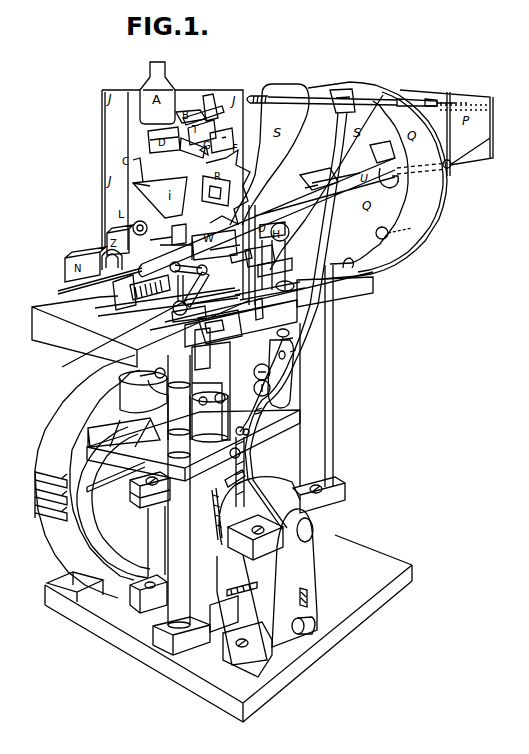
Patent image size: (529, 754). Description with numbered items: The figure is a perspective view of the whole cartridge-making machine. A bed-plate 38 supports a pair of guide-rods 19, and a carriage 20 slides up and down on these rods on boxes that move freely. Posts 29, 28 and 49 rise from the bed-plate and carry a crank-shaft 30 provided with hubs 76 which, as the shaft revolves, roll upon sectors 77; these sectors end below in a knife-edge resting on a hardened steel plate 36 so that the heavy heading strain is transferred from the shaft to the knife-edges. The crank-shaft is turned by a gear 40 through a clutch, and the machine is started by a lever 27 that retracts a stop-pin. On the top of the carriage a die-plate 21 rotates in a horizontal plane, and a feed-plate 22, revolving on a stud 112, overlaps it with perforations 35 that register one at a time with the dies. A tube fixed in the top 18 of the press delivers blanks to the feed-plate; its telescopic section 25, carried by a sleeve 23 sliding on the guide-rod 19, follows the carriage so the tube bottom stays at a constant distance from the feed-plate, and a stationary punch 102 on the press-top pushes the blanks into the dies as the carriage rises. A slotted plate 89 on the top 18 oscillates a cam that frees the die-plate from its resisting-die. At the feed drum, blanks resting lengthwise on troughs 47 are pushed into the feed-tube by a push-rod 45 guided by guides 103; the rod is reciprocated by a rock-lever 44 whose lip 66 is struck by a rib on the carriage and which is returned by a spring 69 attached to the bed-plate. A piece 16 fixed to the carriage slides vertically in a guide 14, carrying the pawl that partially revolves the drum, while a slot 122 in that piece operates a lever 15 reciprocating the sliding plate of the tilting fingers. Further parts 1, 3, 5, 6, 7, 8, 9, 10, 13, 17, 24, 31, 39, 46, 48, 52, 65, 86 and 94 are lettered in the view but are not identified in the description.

The bracket 1 is at (179, 234).
The disc 3 is at (144, 225).
The bearing bracket 5 is at (112, 260).
The rack 6 is at (133, 280).
The rack 7 is at (153, 279).
The block 8 is at (123, 286).
The rod 9 is at (93, 283).
The beam 10 is at (261, 309).
The link 13 is at (113, 340).
The guide 14 is at (202, 349).
The lever 15 is at (240, 328).
The piece 16 is at (211, 391).
The lever 17 is at (217, 278).
The top of the press 18 is at (141, 331).
The guide-rods 19 is at (231, 484).
The carriage 20 is at (193, 532).
The die-plate 21 is at (210, 417).
The feed-plate 22 is at (143, 392).
The sleeve 23 is at (179, 417).
The block 24 is at (150, 490).
The telescopic section 25 is at (154, 381).
The lever 27 is at (112, 476).
The post 28 is at (148, 559).
The post 29 is at (305, 573).
The crank-shaft 30 is at (305, 530).
The roller 31 is at (318, 630).
The perforations 35 is at (117, 375).
The hardened steel plate 36 is at (243, 592).
The bed-plate 38 is at (228, 628).
The block 39 is at (227, 612).
The gear 40 is at (37, 496).
The rock-lever 44 is at (335, 226).
The push-rod 45 is at (485, 158).
The hinge 46 is at (338, 117).
The troughs 47 is at (378, 247).
The rod 48 is at (316, 376).
The post 49 is at (75, 575).
The disc 52 is at (292, 245).
The pin 65 is at (250, 433).
The lip 66 is at (257, 413).
The spring 69 is at (268, 506).
The hubs 76 is at (256, 498).
The sectors 77 is at (244, 616).
The link 86 is at (297, 347).
The slotted plate 89 is at (279, 417).
The link 94 is at (260, 410).
The stationary punch 102 is at (384, 164).
The guides 103 is at (457, 172).
The stud 112 is at (124, 432).
The slot 122 is at (293, 350).